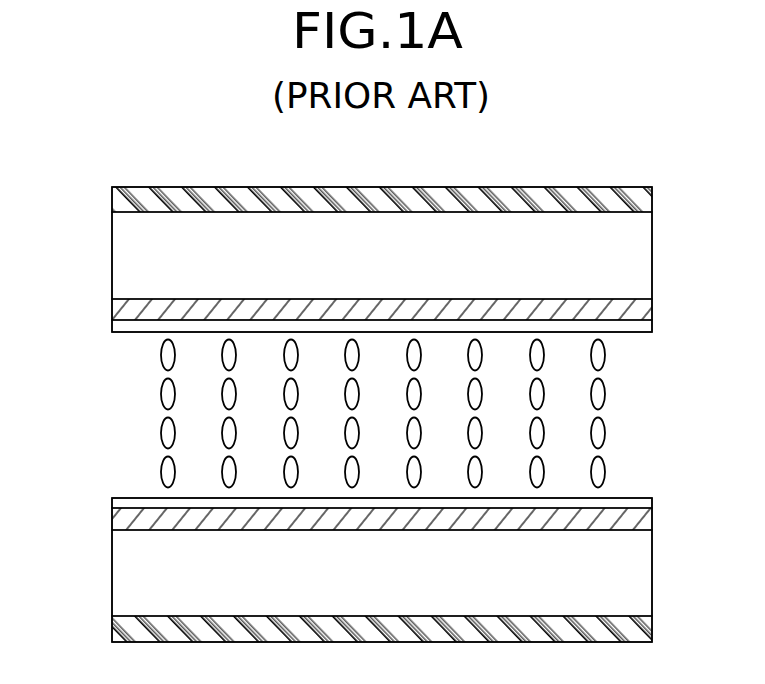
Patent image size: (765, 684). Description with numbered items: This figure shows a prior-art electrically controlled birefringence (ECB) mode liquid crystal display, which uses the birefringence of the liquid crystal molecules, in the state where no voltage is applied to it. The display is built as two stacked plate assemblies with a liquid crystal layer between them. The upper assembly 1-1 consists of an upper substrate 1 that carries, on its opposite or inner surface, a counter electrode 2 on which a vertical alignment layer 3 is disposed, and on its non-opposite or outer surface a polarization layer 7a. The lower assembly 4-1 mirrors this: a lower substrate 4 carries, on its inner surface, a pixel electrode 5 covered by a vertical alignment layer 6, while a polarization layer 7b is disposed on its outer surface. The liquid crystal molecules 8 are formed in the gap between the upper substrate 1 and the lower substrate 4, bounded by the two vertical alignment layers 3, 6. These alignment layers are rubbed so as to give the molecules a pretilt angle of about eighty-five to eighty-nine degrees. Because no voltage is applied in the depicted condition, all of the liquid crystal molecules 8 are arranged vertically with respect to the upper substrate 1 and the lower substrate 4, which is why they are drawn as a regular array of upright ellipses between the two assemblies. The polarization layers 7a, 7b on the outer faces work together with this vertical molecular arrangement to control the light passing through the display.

The upper substrate assembly 1-1 is at (130, 334).
The polarization layer 7a is at (652, 200).
The upper substrate 1 is at (652, 257).
The counter electrode 2 is at (652, 304).
The vertical alignment layer 3 is at (652, 329).
The liquid crystal molecules 8 is at (601, 397).
The lower substrate assembly 4-1 is at (122, 497).
The vertical alignment layer 6 is at (652, 500).
The pixel electrode 5 is at (652, 522).
The lower substrate 4 is at (652, 578).
The polarization layer 7b is at (652, 628).